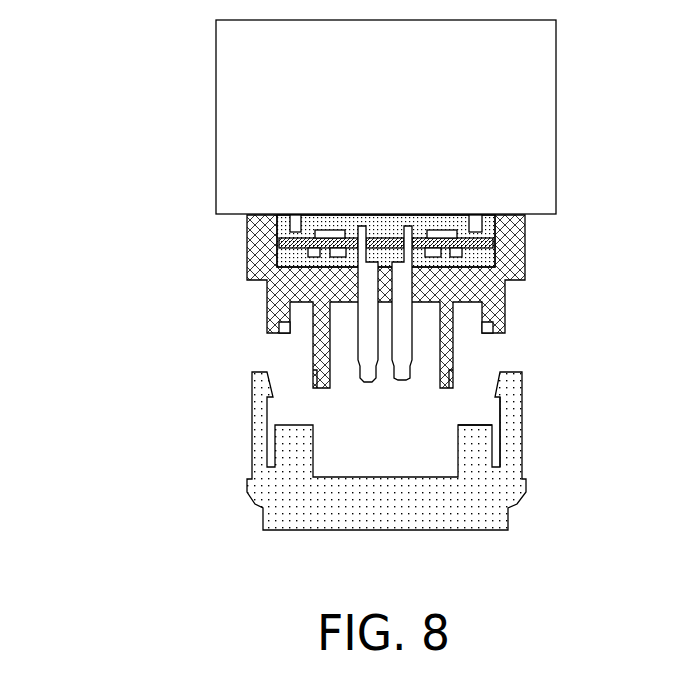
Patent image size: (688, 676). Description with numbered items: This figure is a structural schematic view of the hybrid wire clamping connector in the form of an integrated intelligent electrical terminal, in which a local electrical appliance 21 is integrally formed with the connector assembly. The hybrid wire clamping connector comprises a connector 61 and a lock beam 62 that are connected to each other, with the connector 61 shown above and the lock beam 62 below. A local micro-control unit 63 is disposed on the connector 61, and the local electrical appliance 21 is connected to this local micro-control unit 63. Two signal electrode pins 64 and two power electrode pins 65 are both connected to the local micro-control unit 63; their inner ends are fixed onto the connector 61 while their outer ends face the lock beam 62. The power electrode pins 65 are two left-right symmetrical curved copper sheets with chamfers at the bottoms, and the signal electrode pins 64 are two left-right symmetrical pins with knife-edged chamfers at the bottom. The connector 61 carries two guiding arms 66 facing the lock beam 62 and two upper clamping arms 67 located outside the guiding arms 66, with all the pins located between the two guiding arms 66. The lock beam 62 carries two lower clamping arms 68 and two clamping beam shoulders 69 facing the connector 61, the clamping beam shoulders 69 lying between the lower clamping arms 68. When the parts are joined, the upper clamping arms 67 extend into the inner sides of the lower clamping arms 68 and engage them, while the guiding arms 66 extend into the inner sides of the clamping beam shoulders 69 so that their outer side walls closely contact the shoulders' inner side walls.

The local electrical appliance 21 is at (250, 140).
The connector 61 is at (248, 264).
The lock beam 62 is at (305, 483).
The local micro-control unit 63 is at (295, 240).
The signal electrode pins 64 is at (398, 378).
The power electrode pins 65 is at (403, 342).
The guiding arms 66 is at (527, 262).
The upper clamping arms 67 is at (503, 317).
The lower clamping arms 68 is at (515, 407).
The clamping beam shoulders 69 is at (475, 445).